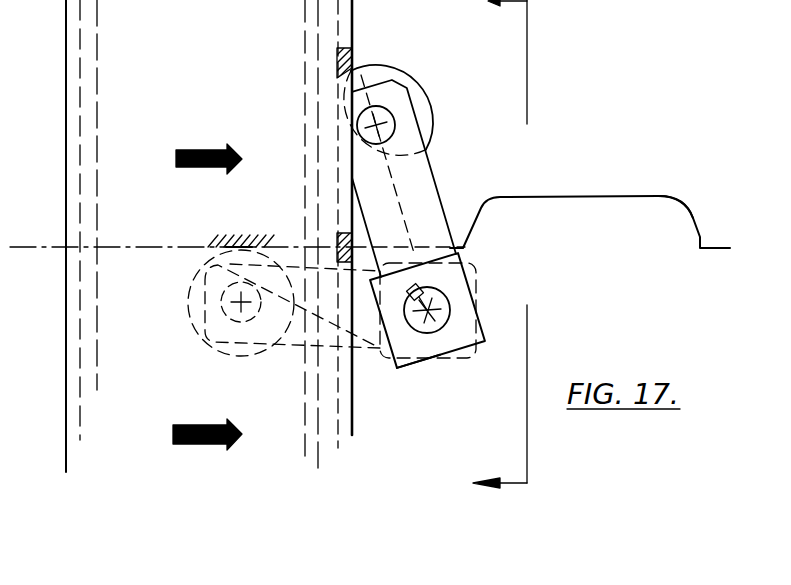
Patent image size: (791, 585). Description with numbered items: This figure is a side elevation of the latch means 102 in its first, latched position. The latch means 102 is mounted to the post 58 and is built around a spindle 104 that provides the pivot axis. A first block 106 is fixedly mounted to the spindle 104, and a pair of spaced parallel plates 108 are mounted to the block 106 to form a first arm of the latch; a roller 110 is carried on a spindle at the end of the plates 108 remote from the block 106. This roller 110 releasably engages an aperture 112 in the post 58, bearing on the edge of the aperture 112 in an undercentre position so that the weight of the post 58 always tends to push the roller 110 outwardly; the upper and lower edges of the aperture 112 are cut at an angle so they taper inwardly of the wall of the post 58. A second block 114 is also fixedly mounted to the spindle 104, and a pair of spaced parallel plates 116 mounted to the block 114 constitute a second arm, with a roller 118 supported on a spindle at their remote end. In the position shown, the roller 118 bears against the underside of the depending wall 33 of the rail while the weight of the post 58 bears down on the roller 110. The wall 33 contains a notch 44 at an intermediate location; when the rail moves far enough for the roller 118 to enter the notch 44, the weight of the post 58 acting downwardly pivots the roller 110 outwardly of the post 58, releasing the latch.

The post 58 is at (152, 128).
The depending wall 33 is at (630, 171).
The notch 44 is at (600, 217).
The latch means 102 is at (480, 326).
The spindle 104 is at (432, 327).
The first block 106 is at (453, 285).
The spaced parallel plates 108 is at (430, 218).
The roller 110 is at (423, 118).
The aperture 112 is at (345, 233).
The second block 114 is at (462, 357).
The spaced parallel plates 116 is at (293, 337).
The roller 118 is at (195, 312).